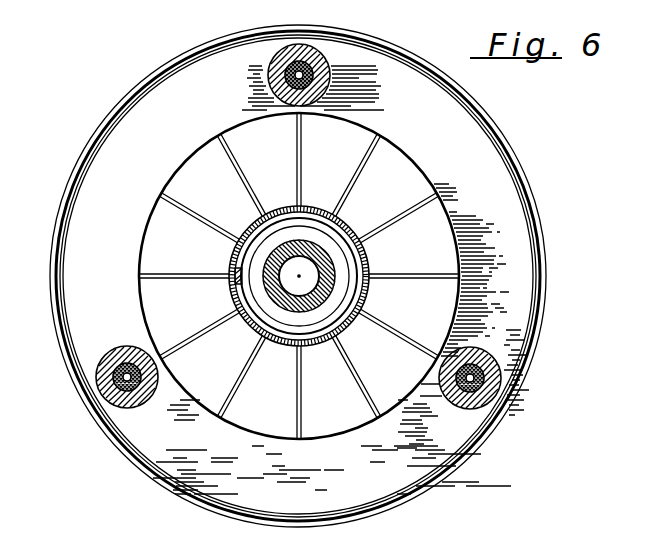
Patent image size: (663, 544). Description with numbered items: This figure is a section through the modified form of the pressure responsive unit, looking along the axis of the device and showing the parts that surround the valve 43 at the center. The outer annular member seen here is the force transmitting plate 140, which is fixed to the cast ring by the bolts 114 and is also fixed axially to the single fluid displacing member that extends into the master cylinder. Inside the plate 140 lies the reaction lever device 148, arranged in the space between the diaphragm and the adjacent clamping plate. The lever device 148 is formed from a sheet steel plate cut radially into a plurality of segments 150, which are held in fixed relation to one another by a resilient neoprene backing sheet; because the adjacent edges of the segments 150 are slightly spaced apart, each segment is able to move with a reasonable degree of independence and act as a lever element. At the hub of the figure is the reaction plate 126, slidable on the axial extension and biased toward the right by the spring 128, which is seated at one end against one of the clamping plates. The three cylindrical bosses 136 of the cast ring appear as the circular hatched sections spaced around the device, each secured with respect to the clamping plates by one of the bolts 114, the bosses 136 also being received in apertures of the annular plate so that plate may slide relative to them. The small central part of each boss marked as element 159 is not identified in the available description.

The annular rim 140 is at (497, 141).
The circular plate 148 is at (431, 170).
The radial ribs 150 is at (172, 178).
The hub ring 126 is at (316, 206).
The hub 128 is at (249, 313).
The shaft 43 is at (335, 260).
The bosses 136 is at (270, 77).
The bearing pins 114 is at (314, 71).
The pivot pins 159 is at (316, 80).